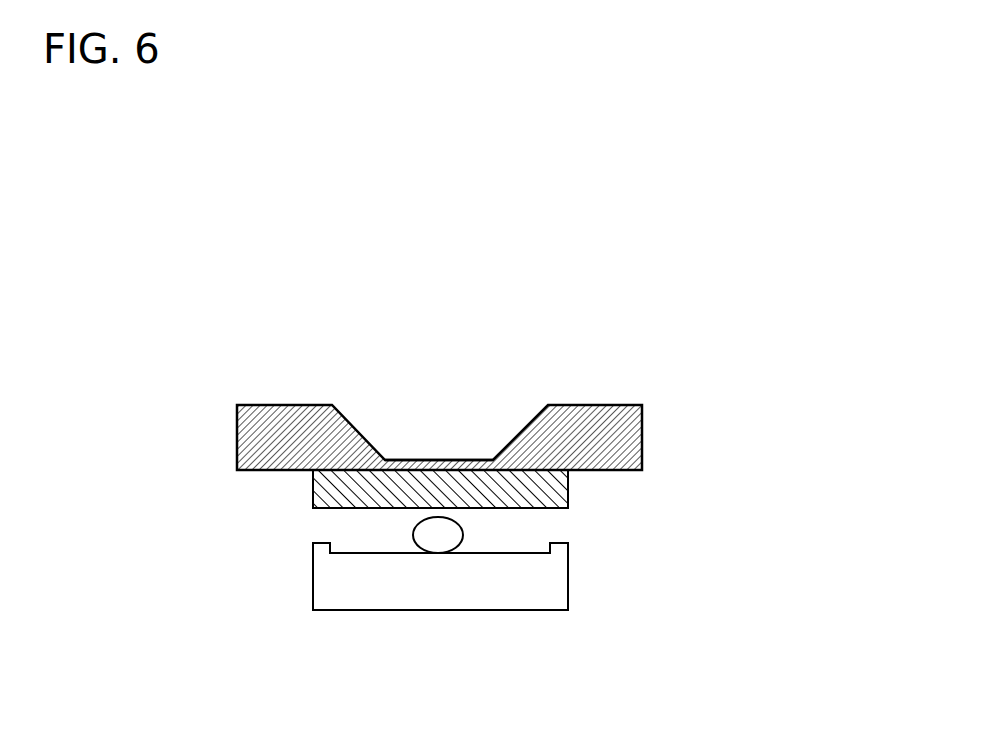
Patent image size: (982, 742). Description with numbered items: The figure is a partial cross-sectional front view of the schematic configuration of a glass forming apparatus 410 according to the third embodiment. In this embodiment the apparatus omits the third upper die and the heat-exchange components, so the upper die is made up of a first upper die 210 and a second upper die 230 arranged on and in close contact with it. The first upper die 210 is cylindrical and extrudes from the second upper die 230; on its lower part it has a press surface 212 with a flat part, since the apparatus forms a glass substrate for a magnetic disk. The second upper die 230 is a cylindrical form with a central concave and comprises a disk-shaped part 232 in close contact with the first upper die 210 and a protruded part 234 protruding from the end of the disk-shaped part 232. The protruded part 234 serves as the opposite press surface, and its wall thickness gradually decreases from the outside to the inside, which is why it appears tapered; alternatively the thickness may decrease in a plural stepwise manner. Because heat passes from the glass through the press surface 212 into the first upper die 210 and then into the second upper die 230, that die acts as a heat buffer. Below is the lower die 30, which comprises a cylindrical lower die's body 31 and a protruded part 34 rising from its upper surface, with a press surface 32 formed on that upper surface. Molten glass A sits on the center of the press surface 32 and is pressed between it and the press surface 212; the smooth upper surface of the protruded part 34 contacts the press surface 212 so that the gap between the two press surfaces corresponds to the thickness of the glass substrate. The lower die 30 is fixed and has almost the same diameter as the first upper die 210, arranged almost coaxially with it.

The glass forming apparatus 410 is at (870, 194).
The second upper die 230 is at (237, 436).
The protruded part 234 is at (237, 456).
The disk-shaped part 232 is at (434, 458).
The first upper die 210 is at (313, 492).
The press surface 212 is at (362, 509).
The lower die 30 is at (366, 611).
The lower die's body 31 is at (568, 592).
The press surface 32 is at (527, 553).
The protruded part 34 is at (318, 548).
The molten glass A is at (463, 543).